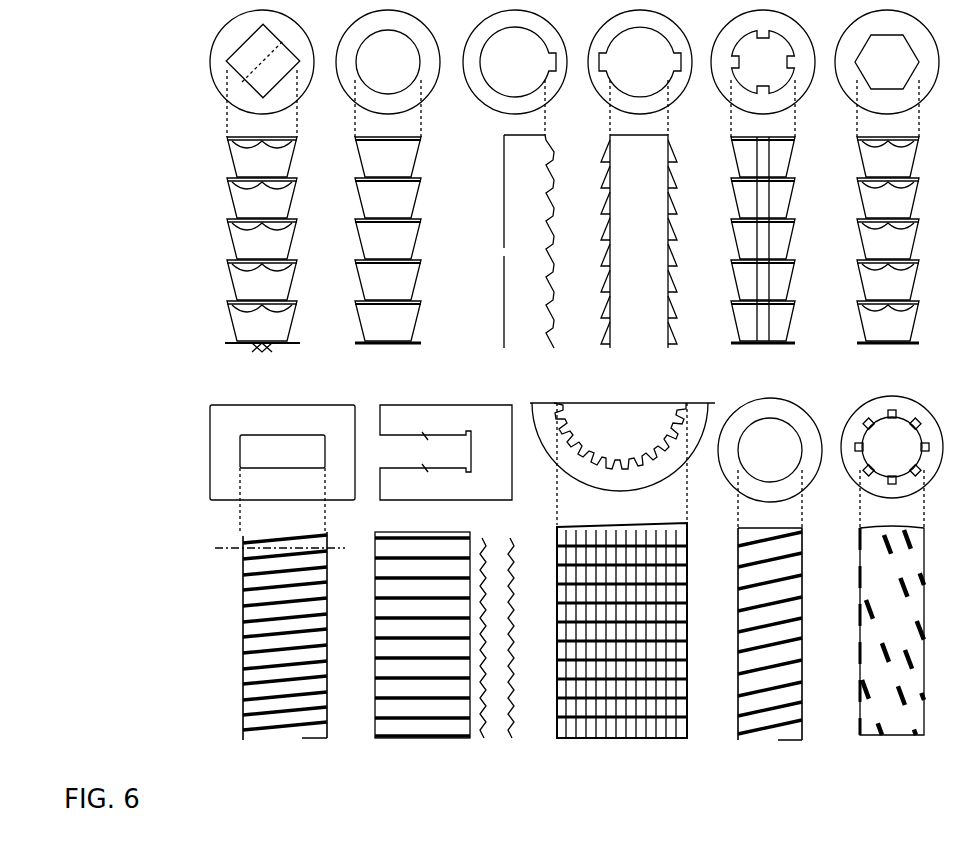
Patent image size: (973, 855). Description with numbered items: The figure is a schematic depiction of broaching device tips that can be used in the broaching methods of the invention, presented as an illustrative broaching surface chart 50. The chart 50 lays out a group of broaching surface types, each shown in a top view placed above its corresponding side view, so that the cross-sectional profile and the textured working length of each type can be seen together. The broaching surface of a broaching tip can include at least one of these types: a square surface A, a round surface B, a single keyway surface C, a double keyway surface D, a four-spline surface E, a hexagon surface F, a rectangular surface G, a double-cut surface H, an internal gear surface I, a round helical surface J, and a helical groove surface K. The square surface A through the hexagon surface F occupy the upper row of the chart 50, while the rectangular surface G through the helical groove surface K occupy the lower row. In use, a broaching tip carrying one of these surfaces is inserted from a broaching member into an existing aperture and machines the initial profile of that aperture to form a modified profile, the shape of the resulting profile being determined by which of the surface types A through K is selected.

The broaching surface chart 50 is at (122, 102).
The square surface A is at (262, 196).
The round surface B is at (388, 196).
The single keyway surface C is at (515, 203).
The double keyway surface D is at (640, 203).
The 4-spline surface E is at (763, 196).
The hexagon surface F is at (887, 196).
The rectangular surface G is at (282, 596).
The double-cut surface H is at (444, 596).
The internal gear surface I is at (622, 587).
The round helical surface J is at (770, 583).
The helical groove surface K is at (892, 591).